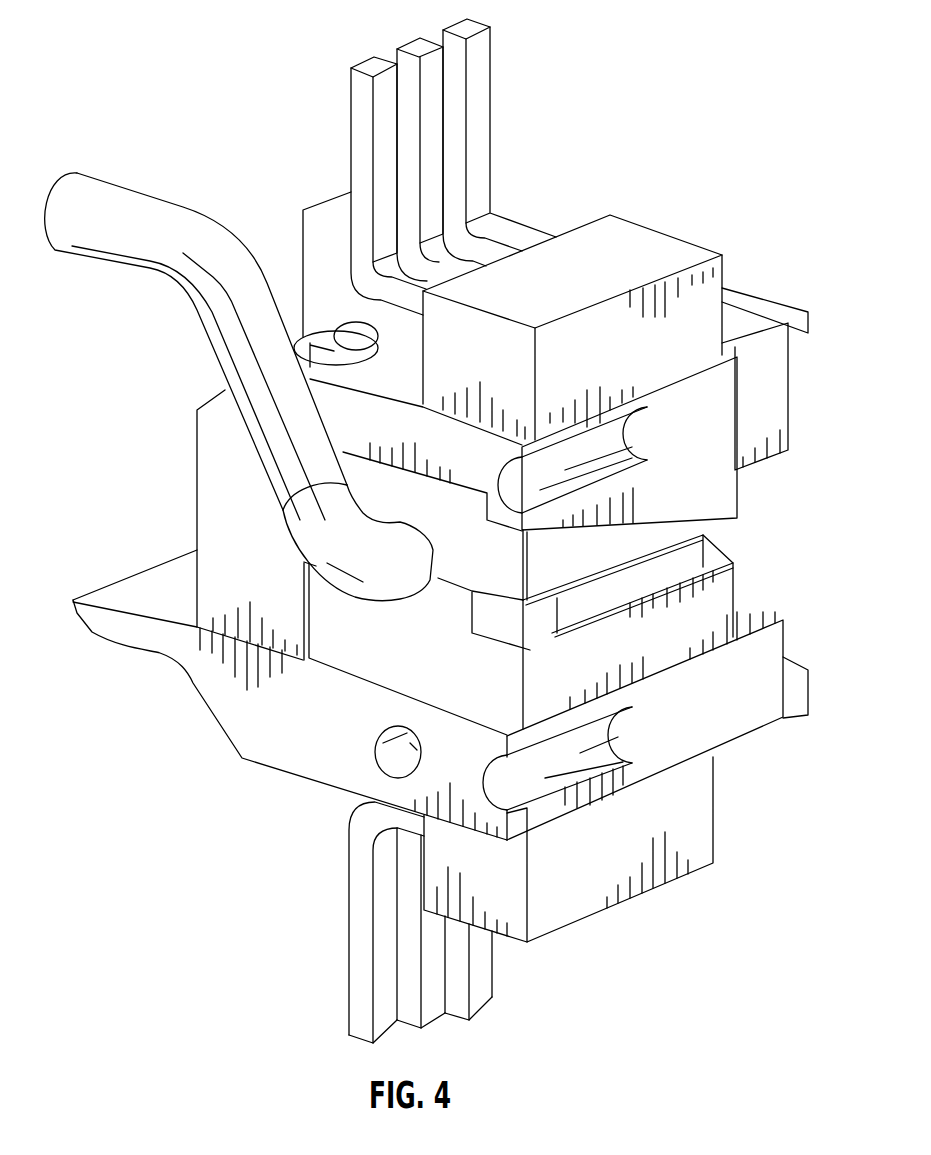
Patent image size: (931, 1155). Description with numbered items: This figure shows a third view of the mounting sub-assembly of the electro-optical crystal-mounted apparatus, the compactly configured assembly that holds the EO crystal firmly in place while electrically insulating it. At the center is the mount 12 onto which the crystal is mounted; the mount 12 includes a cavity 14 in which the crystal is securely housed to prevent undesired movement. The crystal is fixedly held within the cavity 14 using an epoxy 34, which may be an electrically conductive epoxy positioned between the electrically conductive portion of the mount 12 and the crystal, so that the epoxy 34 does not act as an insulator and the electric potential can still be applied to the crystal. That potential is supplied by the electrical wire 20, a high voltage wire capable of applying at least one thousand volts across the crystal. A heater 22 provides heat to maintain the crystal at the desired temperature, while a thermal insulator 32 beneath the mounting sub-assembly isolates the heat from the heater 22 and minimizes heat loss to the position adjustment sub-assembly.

The mount 12 is at (403, 650).
The cavity 14 is at (525, 635).
The electrical wire 20 is at (117, 187).
The heater 22 is at (625, 237).
The thermal insulator 32 is at (772, 300).
The epoxy 34 is at (707, 553).